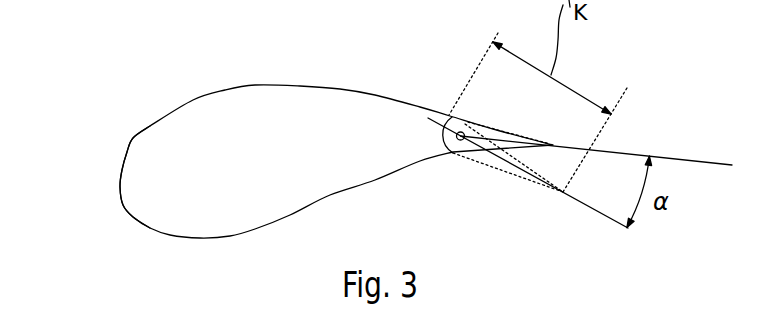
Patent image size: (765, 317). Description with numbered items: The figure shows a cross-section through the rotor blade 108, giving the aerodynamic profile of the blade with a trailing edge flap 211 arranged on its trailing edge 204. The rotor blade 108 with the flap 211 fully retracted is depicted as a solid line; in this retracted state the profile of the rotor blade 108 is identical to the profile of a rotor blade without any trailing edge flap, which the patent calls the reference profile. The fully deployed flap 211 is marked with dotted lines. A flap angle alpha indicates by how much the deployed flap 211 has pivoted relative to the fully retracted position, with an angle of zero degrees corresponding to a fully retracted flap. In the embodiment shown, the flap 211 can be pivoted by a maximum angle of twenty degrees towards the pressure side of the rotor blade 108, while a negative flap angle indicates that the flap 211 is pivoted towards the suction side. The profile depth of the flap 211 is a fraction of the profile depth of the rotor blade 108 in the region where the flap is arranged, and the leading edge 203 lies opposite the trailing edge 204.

The rotor blade 108 is at (130, 137).
The leading edge 203 is at (125, 200).
The trailing edge 204 is at (557, 145).
The trailing edge flap 211 is at (482, 162).